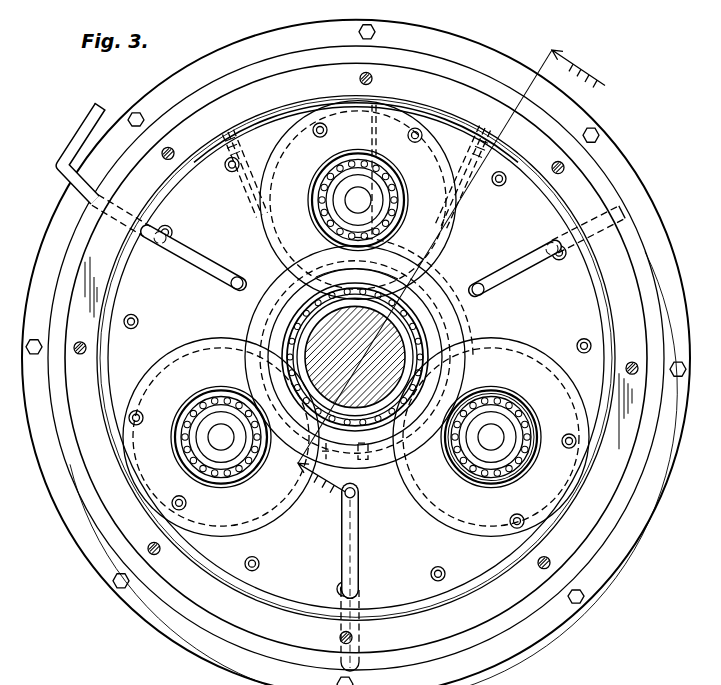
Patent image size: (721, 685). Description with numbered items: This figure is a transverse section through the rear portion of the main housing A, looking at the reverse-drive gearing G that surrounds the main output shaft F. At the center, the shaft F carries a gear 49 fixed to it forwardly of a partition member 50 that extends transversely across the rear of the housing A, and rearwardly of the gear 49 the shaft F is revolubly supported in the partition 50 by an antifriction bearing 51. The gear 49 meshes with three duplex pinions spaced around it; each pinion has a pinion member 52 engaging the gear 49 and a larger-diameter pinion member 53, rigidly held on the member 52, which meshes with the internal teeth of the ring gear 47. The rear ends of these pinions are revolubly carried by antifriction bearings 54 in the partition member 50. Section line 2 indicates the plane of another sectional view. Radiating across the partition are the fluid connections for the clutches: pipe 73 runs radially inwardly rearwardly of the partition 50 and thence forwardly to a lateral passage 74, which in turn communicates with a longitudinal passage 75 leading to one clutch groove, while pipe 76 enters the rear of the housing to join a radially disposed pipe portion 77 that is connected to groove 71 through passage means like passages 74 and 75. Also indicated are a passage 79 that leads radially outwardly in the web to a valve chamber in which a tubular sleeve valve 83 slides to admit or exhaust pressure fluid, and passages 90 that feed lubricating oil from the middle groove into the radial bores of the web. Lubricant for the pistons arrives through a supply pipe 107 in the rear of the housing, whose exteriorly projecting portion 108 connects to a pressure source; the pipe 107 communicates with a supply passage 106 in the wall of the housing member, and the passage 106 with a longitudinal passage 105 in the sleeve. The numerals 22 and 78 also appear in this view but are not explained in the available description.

The main housing A is at (356, 352).
The gear set G is at (356, 351).
The main output shaft F is at (356, 358).
The section line 2- 2 is at (451, 276).
The ball bearing race 22 is at (355, 363).
The ring gear 47 is at (463, 163).
The gear 49 is at (372, 357).
The partition member 50 is at (362, 365).
The antifriction bearing 51 is at (374, 357).
The pinion member 52 is at (491, 437).
The pinion member 53 is at (557, 303).
The antifriction bearing 54 is at (491, 420).
The groove 71 is at (355, 359).
The pipe 73 is at (548, 250).
The lateral passage 74 is at (365, 355).
The longitudinal passage 75 is at (414, 297).
The pipe 76 is at (97, 170).
The pipe portion 77 is at (190, 260).
The planet gear housing 78 is at (357, 261).
The passage 79 is at (358, 200).
The sleeve valve 83 is at (244, 174).
The passages 90 is at (357, 171).
The longitudinal passage 105 is at (330, 459).
The supply passage 106 is at (372, 459).
The supply pipe 107 is at (370, 578).
The exteriorly projecting portion 108 is at (372, 630).